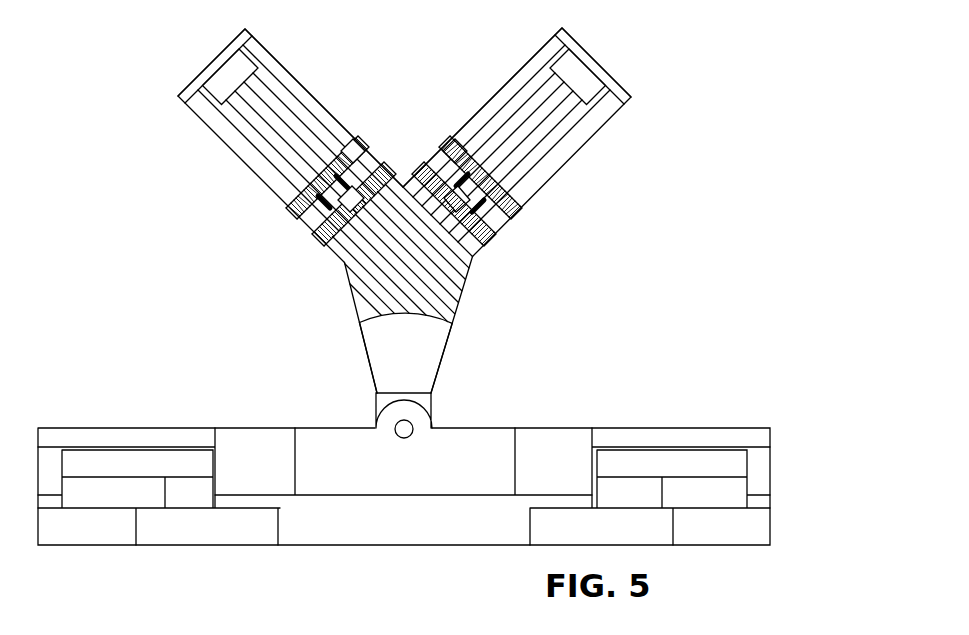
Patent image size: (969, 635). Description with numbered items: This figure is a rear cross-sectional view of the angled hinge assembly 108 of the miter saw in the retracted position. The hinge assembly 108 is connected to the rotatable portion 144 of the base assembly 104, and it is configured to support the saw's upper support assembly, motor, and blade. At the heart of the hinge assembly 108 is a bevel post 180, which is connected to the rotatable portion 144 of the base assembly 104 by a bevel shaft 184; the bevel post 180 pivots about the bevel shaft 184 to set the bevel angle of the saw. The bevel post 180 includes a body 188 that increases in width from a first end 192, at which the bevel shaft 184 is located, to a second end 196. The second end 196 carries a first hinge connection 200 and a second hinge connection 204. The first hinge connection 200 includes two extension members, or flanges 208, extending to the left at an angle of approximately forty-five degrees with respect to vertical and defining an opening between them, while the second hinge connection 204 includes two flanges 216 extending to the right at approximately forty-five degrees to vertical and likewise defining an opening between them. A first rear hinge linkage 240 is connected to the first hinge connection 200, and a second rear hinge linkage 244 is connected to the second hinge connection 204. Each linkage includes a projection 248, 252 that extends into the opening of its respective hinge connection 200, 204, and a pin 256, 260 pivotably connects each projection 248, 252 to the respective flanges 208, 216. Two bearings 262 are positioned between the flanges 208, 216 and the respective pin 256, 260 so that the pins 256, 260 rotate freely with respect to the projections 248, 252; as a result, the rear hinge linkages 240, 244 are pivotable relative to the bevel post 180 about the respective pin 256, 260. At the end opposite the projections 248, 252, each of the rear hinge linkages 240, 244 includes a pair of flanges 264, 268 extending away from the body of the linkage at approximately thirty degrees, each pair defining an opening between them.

The base assembly 104 is at (301, 560).
The hinge assembly 108 is at (186, 49).
The rotatable portion 144 is at (535, 447).
The bevel post 180 is at (358, 330).
The bevel shaft 184 is at (408, 428).
The body 188 is at (453, 302).
The first end 192 is at (383, 400).
The second end 196 is at (400, 225).
The first hinge connection 200 is at (313, 247).
The second hinge connection 204 is at (497, 249).
The flanges 208 is at (358, 150).
The flanges 216 is at (456, 150).
The first rear hinge linkage 240 is at (299, 90).
The second rear hinge linkage 244 is at (513, 90).
The projection 248 is at (325, 178).
The projection 252 is at (486, 190).
The pin 256 is at (330, 228).
The pin 260 is at (482, 235).
The bearings 262 is at (342, 172).
The flanges 264 is at (196, 106).
The flanges 268 is at (618, 106).